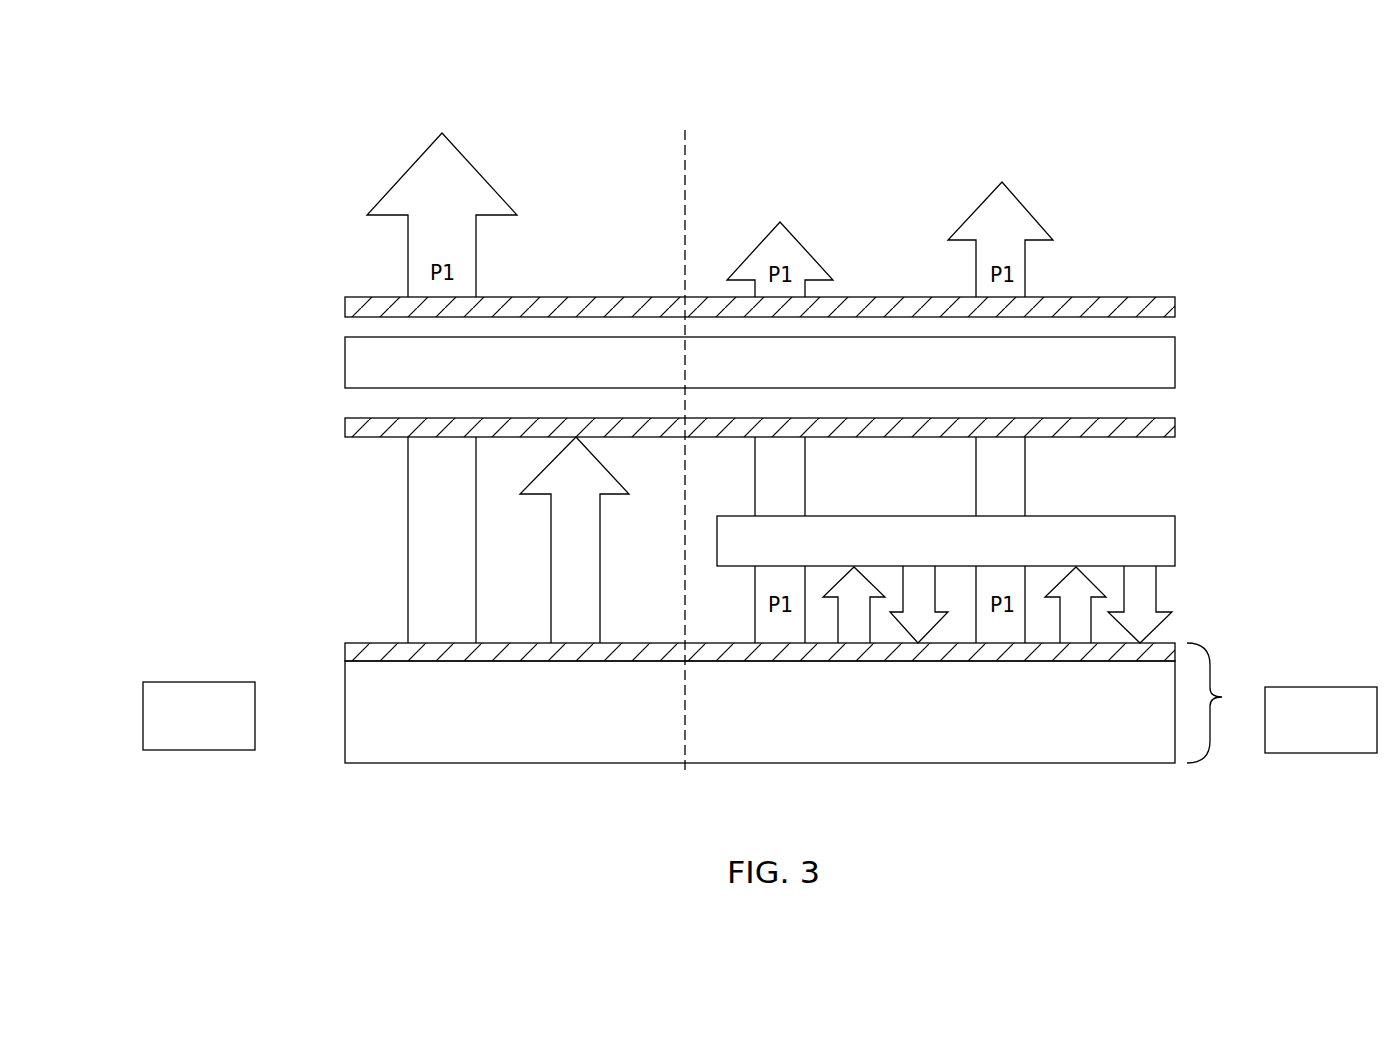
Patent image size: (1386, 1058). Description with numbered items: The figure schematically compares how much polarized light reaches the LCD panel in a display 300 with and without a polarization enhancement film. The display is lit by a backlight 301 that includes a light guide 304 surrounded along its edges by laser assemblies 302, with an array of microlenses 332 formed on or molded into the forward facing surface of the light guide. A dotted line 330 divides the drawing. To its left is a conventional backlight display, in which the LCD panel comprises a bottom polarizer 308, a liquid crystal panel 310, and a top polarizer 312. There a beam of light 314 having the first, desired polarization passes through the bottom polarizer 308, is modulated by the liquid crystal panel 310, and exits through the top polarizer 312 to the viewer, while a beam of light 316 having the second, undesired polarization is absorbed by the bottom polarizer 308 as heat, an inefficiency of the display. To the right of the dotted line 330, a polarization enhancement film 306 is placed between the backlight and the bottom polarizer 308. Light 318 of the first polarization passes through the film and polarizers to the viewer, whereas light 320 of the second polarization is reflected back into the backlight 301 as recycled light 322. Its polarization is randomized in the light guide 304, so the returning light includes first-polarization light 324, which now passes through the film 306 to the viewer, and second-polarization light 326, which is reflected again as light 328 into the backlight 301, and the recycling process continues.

The display 300 is at (247, 58).
The backlight 301 is at (1222, 697).
The laser assemblies 302 is at (227, 747).
The light guide 304 is at (1160, 763).
The polarization enhancement film 306 is at (1170, 548).
The bottom polarizer 308 is at (1170, 428).
The liquid crystal panel 310 is at (1168, 362).
The top polarizer 312 is at (1170, 308).
The beam of light with polarization P1 314 is at (407, 545).
The beam of light with polarization P2 316 is at (575, 643).
The light of polarization P1 318 is at (805, 468).
The light of polarization P2 320 is at (853, 643).
The recycled light 322 is at (910, 643).
The light of polarization P1 324 is at (1027, 468).
The light of polarization P2 326 is at (1075, 643).
The light reflected back into backlight 328 is at (1137, 643).
The dotted line 330 is at (683, 180).
The array of microlenses 332 is at (1147, 643).